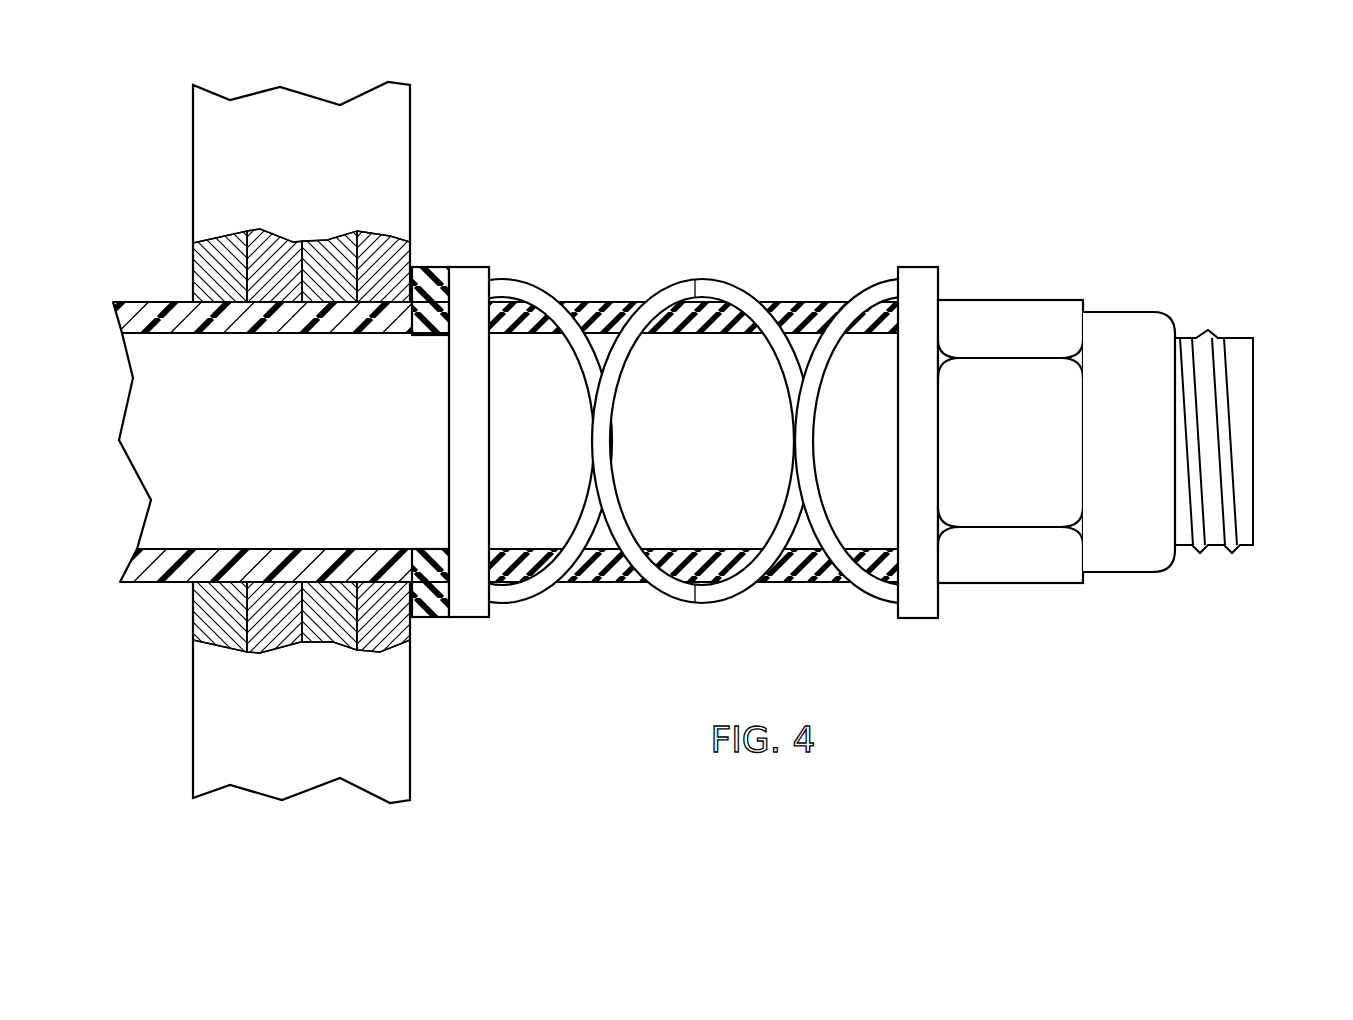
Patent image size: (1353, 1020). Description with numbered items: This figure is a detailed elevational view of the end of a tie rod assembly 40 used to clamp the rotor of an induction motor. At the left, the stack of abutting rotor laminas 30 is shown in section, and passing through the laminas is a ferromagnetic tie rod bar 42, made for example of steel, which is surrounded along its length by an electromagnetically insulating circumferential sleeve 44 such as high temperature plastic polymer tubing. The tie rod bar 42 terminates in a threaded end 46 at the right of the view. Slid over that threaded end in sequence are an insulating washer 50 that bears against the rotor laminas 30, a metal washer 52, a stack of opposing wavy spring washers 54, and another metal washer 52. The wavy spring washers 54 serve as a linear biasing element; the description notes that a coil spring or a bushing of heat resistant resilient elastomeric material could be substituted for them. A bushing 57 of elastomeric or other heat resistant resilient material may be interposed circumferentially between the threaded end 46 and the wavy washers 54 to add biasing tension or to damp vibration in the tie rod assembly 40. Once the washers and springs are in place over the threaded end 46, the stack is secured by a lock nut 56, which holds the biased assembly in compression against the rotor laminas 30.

The rotor laminas 30 is at (380, 153).
The tie rod assembly 40 is at (1290, 492).
The tie rod bar 42 is at (255, 469).
The circumferential sleeve 44 is at (131, 318).
The threaded ends 46 is at (1215, 530).
The insulating washer 50 is at (428, 278).
The metal washer 52 is at (472, 600).
The wavy spring washers 54 is at (513, 290).
The lock nut 56 is at (1030, 568).
The bushing 57 is at (605, 317).